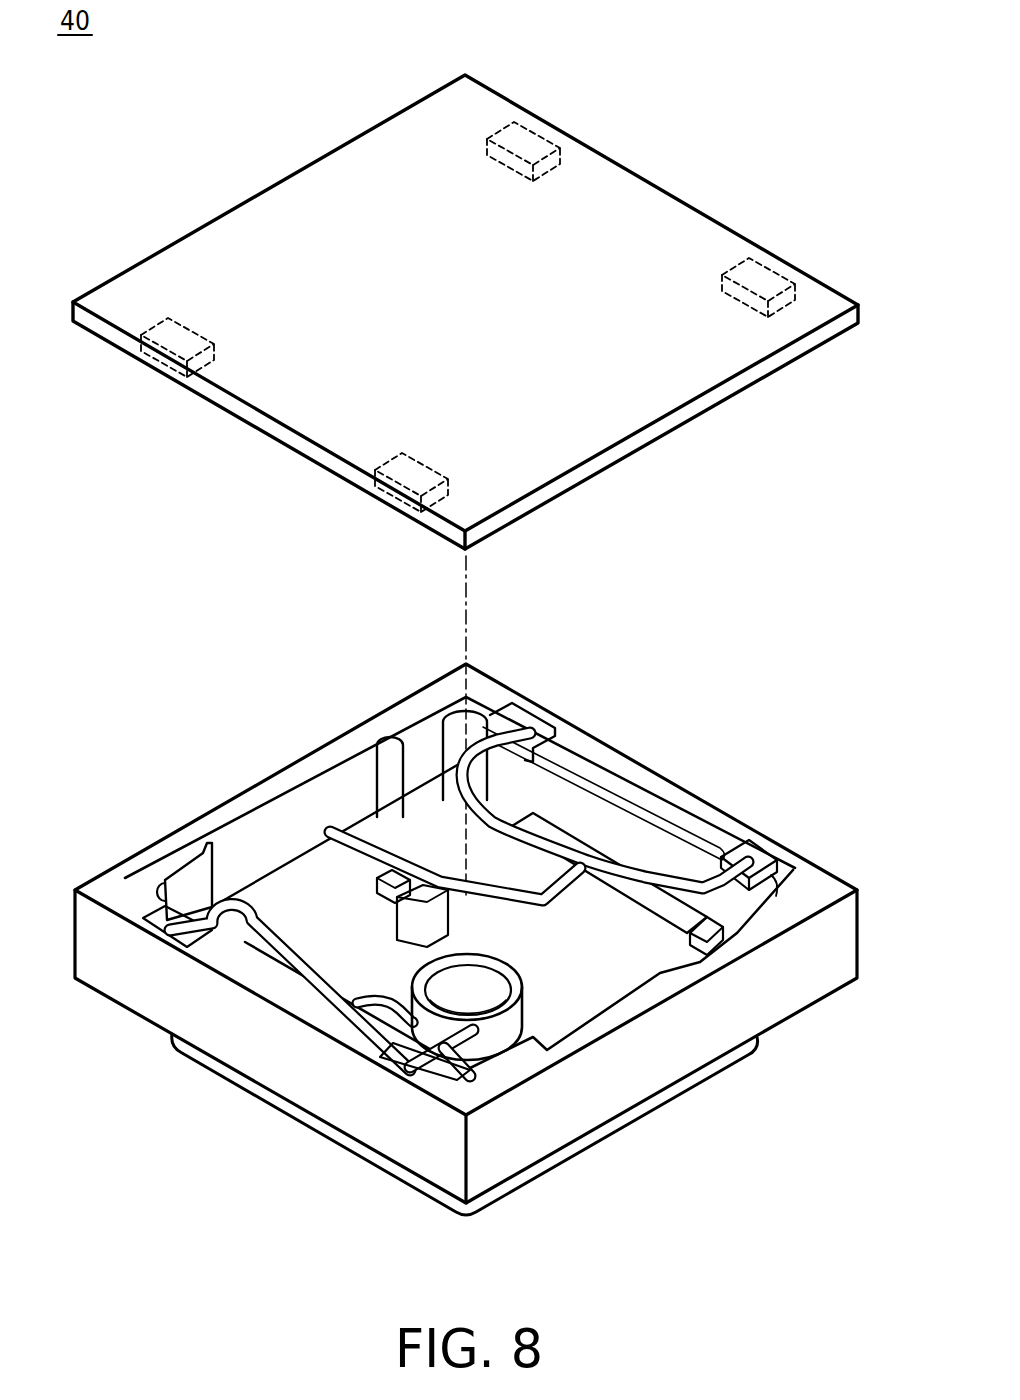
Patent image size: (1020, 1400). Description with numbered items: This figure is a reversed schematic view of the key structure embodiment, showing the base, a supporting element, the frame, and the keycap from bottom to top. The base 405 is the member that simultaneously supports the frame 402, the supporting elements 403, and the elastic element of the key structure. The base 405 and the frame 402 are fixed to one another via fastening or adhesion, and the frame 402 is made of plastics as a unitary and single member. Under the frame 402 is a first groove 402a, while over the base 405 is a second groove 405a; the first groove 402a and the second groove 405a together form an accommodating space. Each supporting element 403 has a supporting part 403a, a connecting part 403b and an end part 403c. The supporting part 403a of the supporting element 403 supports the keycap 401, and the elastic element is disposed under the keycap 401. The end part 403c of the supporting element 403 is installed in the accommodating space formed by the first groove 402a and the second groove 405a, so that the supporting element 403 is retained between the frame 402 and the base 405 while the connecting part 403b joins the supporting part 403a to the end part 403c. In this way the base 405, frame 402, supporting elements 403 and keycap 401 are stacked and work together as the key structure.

The keycap 401 is at (610, 1132).
The frame 402 is at (715, 823).
The first groove 402a is at (772, 871).
The supporting element 403 is at (280, 630).
The supporting part 403a is at (337, 935).
The connecting part 403b is at (487, 893).
The end part 403c is at (490, 752).
The base 405 is at (630, 200).
The second groove 405a is at (758, 276).